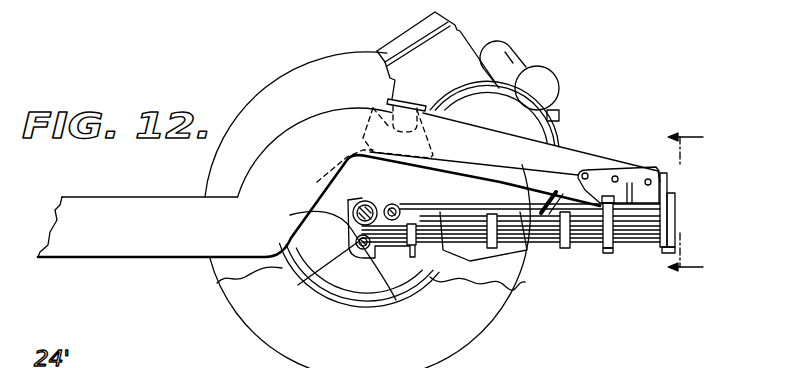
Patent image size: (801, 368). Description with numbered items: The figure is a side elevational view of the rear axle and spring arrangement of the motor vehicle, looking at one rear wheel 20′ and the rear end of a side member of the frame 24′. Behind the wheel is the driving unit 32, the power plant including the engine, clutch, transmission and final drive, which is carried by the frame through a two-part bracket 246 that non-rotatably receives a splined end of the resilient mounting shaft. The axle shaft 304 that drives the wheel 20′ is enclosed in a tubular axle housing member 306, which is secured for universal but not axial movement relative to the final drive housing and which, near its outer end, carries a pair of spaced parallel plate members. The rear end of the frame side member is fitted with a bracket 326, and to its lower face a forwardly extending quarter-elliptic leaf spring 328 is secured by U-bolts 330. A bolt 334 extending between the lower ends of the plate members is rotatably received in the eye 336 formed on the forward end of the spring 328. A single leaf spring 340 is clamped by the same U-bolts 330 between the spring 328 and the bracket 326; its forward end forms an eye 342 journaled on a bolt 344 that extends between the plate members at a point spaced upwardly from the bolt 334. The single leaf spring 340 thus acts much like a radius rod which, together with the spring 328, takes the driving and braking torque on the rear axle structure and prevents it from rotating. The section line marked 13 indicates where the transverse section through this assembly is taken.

The wheel 20′ is at (453, 318).
The frame 24′ is at (132, 172).
The driving unit 32 is at (466, 33).
The two-part bracket 246 is at (362, 103).
The axle shaft 304 is at (338, 200).
The tubular axle housing member 306 is at (327, 176).
The bracket 326 is at (662, 184).
The quarter-elliptic leaf spring 328 is at (545, 245).
The U-bolts 330 is at (662, 222).
The bolt 334 is at (369, 264).
The eye 336 is at (311, 274).
The single leaf spring 340 is at (521, 168).
The eye 342 is at (390, 203).
The bolt 344 is at (404, 201).
The section line 13- 13 is at (665, 202).